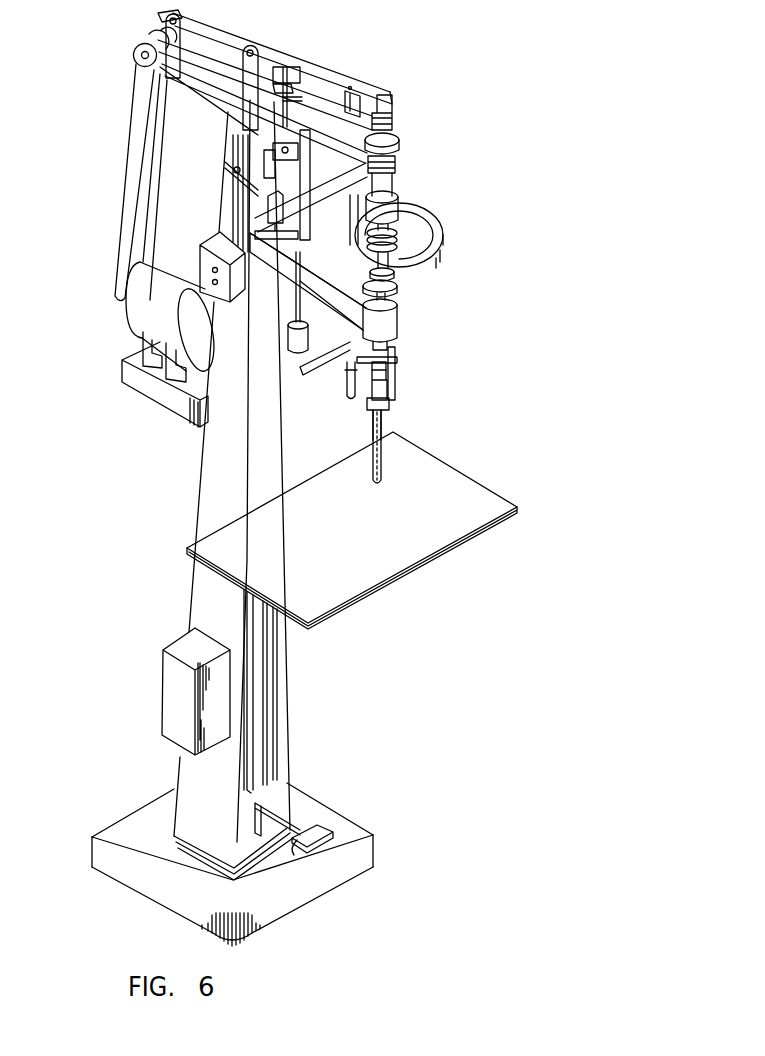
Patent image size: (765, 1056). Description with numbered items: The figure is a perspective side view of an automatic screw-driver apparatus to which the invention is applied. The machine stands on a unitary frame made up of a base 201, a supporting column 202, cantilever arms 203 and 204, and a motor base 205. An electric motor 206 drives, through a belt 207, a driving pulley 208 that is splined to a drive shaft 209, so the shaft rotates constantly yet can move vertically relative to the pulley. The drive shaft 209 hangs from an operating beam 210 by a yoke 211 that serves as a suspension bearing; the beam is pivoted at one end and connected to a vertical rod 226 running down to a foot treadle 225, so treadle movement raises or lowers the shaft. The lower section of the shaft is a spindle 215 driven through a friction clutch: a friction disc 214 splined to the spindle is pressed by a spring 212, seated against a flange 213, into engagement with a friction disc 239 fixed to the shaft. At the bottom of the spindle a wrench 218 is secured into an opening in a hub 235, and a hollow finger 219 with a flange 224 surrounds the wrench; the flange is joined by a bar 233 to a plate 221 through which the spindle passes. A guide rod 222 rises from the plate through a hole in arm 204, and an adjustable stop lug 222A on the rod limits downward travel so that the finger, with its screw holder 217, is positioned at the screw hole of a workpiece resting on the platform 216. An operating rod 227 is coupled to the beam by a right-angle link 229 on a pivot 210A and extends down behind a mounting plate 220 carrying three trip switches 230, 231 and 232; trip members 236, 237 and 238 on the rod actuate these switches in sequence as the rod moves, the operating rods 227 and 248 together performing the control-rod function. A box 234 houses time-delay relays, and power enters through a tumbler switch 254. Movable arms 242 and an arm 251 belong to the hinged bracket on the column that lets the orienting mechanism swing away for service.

The base 201 is at (127, 833).
The supporting column 202 is at (212, 478).
The cantilever arm 203 is at (215, 115).
The cantilever arm 204 is at (282, 273).
The motor base 205 is at (168, 398).
The electric motor 206 is at (147, 315).
The belt 207 is at (150, 168).
The driving pulley 208 is at (400, 148).
The drive shaft 209 is at (399, 137).
The operating beam 210 is at (357, 68).
The pivot 210A is at (297, 70).
The yoke 211 is at (392, 108).
The spring 212 is at (393, 278).
The flange 213 is at (397, 290).
The friction disc 214 is at (428, 240).
The spindle 215 is at (383, 306).
The platform 216 is at (413, 552).
The screw holder 217 is at (382, 480).
The wrench 218 is at (382, 388).
The hollow finger 219 is at (385, 427).
The mounting plate 220 is at (307, 193).
The plate 221 is at (395, 347).
The guide rod 222 is at (356, 305).
The stop lug 222A is at (337, 290).
The flange 224 is at (365, 402).
The foot treadle 225 is at (320, 825).
The vertical rod 226 is at (257, 65).
The operating rod 227 is at (300, 100).
The right-angle link 229 is at (289, 88).
The trip switch 230 is at (280, 208).
The trip switch 231 is at (298, 198).
The trip switch 232 is at (270, 168).
The bar 233 is at (395, 378).
The box 234 is at (173, 680).
The hub 235 is at (235, 170).
The trip member 236 is at (262, 270).
The trip member 237 is at (302, 148).
The trip member 238 is at (283, 90).
The friction disc 239 is at (410, 235).
The movable arms 242 is at (313, 357).
The operating rod 248 is at (353, 387).
The arm 251 is at (312, 317).
The tumbler switch 254 is at (220, 237).